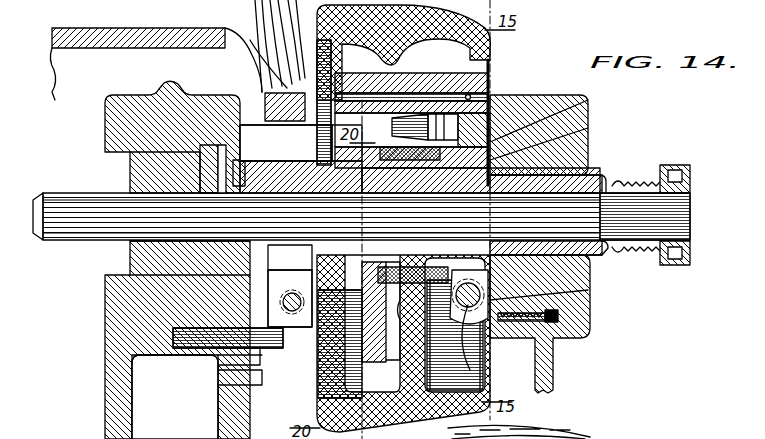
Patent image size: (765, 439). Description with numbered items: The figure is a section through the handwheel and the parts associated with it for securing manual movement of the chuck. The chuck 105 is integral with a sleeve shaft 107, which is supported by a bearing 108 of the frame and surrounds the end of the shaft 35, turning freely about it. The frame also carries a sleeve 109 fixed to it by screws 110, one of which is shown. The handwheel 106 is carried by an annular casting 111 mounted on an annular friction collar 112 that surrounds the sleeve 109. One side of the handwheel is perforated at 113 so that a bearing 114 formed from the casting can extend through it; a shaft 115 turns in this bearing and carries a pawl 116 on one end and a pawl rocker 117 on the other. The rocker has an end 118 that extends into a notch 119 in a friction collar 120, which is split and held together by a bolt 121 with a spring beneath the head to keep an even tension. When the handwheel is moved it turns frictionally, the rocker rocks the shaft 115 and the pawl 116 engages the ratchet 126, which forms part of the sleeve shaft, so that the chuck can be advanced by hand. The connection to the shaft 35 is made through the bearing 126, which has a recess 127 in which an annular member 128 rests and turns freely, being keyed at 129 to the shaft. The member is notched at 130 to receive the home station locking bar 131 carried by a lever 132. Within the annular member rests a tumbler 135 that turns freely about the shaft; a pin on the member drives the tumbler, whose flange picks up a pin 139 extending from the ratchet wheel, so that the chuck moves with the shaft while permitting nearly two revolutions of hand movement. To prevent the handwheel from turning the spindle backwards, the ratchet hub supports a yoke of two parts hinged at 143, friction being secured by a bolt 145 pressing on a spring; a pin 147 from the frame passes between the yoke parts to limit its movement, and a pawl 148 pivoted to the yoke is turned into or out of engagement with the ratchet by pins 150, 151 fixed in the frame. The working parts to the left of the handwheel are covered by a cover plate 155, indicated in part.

The shaft 35 is at (80, 205).
The chuck 105 is at (620, 182).
The handwheel 106 is at (490, 14).
The sleeve shaft 107 is at (588, 148).
The bearing 108 is at (588, 115).
The sleeve 109 is at (588, 280).
The screws 110 is at (560, 317).
The annular casting 111 is at (381, 312).
The annular friction collar 112 is at (588, 297).
The perforation 113 is at (488, 62).
The bearing 114 is at (488, 76).
The shaft 115 is at (488, 90).
The pawl 116 is at (322, 100).
The pawl rocker 117 is at (535, 95).
The end of pawl rocker 118 is at (560, 97).
The notch 119 is at (588, 100).
The friction collar 120 is at (588, 131).
The bolt 121 is at (488, 356).
The ratchet 126 is at (137, 122).
The recess 127 is at (190, 160).
The annular member 128 is at (222, 160).
The key 129 is at (195, 262).
The notch 130 is at (205, 172).
The home station locking bar 131 is at (301, 143).
The lever 132 is at (255, 30).
The tumbler 135 is at (210, 280).
The pin 139 is at (232, 312).
The hinge 143 is at (300, 385).
The bolt 145 is at (172, 358).
The pin 147 is at (190, 332).
The pawl 148 is at (383, 332).
The pin 150 is at (225, 378).
The pin 151 is at (225, 362).
The cover plate 155 is at (172, 45).